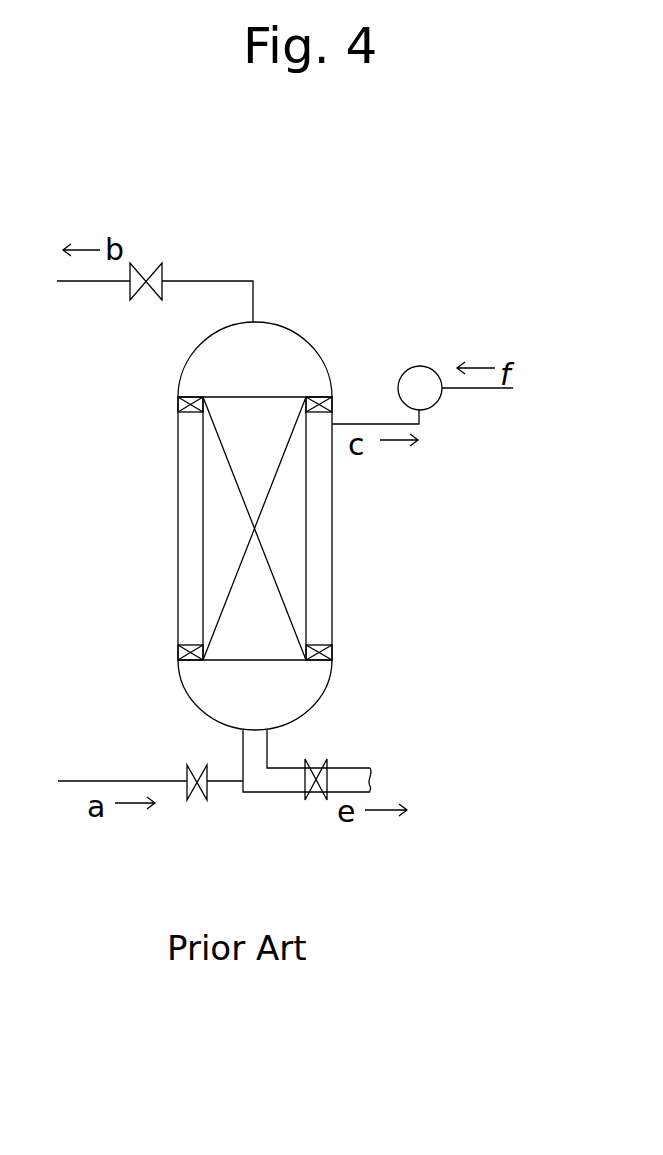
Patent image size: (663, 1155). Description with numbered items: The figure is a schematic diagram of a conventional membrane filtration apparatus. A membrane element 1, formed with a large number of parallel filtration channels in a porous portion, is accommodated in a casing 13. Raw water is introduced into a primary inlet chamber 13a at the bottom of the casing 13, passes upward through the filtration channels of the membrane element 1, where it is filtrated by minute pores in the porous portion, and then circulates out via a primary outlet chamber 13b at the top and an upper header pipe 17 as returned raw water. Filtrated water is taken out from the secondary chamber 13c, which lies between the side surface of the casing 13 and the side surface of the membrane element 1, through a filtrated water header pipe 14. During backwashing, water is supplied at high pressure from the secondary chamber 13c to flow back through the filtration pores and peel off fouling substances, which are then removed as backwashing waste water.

The membrane element 1 is at (223, 538).
The casing 13 is at (308, 499).
The primary inlet chamber 13a is at (295, 687).
The primary outlet chamber 13b is at (293, 362).
The secondary chamber 13c is at (322, 563).
The filtrated water header pipe 14 is at (423, 395).
The upper header pipe 17 is at (213, 282).